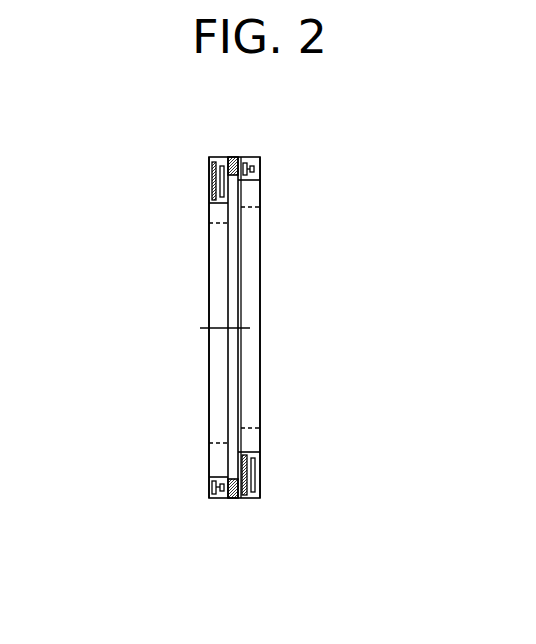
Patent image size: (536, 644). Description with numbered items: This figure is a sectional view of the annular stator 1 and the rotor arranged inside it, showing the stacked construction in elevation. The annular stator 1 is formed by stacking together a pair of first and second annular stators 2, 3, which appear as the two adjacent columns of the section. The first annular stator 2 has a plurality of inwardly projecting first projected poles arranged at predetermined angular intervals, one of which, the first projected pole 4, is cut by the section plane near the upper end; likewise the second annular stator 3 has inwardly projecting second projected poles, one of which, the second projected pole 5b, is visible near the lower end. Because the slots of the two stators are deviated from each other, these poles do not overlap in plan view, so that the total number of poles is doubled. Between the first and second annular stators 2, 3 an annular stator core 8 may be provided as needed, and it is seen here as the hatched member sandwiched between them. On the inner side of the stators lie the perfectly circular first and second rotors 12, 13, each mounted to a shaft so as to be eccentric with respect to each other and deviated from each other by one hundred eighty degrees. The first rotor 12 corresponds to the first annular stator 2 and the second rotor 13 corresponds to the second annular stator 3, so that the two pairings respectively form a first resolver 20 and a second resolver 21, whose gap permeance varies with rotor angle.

The annular stator 1 is at (283, 171).
The first annular stator 2 is at (209, 418).
The second annular stator 3 is at (260, 253).
The first projected pole 4 is at (214, 186).
The second projected pole 5b is at (255, 491).
The annular stator core 8 is at (232, 157).
The first rotor 12 is at (216, 280).
The second rotor 13 is at (250, 386).
The first resolver 20 is at (216, 500).
The second resolver 21 is at (248, 499).